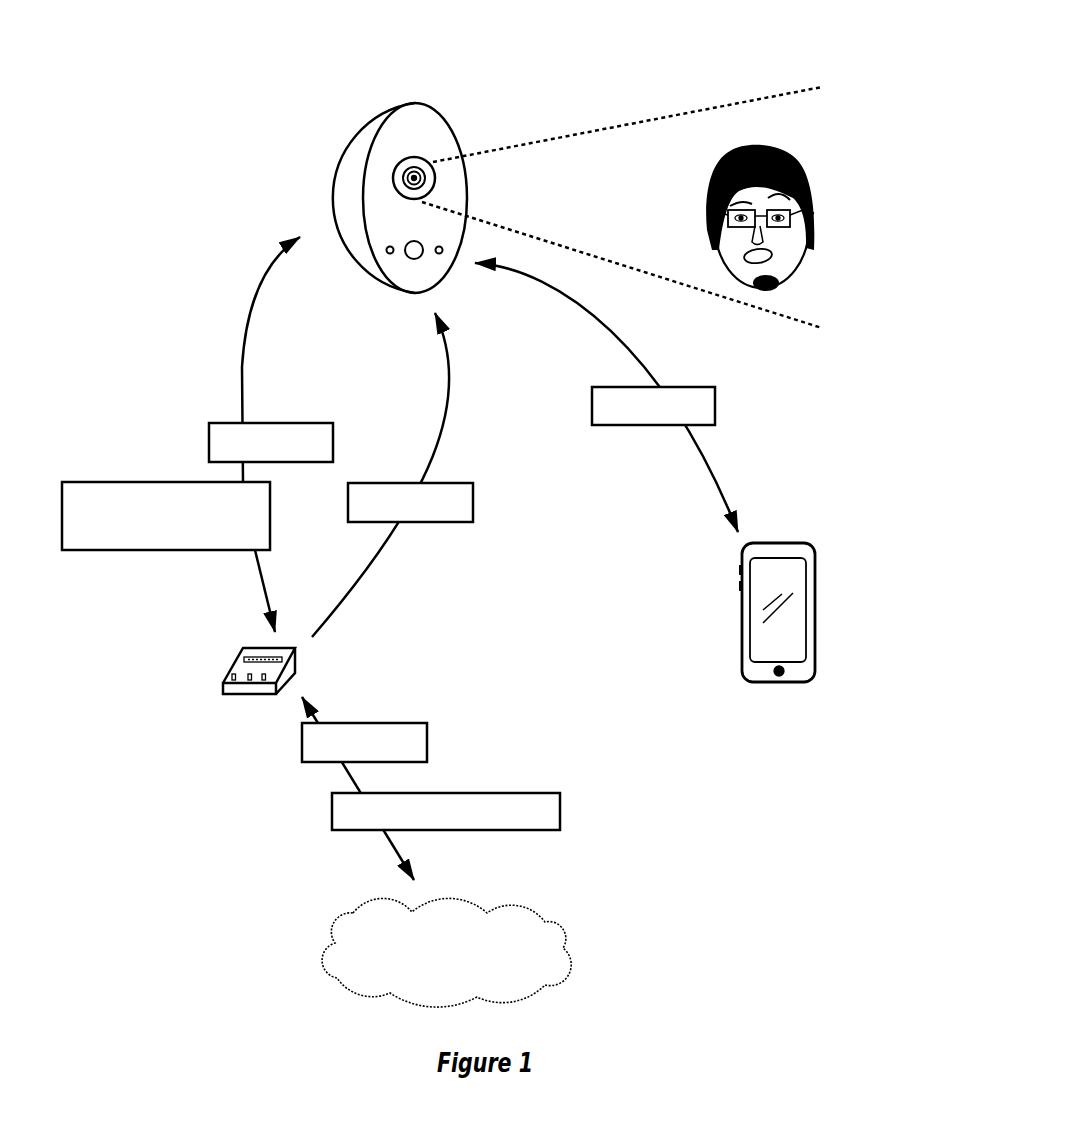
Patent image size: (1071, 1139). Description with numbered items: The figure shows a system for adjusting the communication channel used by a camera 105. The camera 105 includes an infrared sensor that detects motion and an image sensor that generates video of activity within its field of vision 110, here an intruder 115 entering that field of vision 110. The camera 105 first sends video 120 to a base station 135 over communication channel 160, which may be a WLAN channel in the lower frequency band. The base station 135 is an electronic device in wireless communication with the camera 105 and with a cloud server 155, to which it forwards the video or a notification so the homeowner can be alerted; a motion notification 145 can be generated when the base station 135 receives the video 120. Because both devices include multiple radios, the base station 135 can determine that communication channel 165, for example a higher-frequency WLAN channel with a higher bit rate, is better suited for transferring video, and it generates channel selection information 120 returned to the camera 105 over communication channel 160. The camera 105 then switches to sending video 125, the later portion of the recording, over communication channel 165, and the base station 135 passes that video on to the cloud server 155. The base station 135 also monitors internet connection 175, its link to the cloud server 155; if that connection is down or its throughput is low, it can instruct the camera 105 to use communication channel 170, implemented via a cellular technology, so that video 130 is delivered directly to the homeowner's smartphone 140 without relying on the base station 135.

The camera 105 is at (365, 112).
The field of vision 110 is at (793, 92).
The intruder 115 is at (826, 152).
The video 120 is at (315, 454).
The video 125 is at (453, 514).
The video 130 is at (696, 418).
The base station 135 is at (223, 678).
The smartphone 140 is at (768, 543).
The motion notification 145 is at (548, 823).
The cloud server 155 is at (463, 965).
The communication channel 160 is at (243, 367).
The communication channel 165 is at (437, 435).
The communication channel 170 is at (575, 302).
The internet connection 175 is at (390, 852).